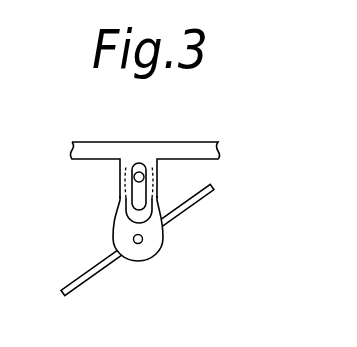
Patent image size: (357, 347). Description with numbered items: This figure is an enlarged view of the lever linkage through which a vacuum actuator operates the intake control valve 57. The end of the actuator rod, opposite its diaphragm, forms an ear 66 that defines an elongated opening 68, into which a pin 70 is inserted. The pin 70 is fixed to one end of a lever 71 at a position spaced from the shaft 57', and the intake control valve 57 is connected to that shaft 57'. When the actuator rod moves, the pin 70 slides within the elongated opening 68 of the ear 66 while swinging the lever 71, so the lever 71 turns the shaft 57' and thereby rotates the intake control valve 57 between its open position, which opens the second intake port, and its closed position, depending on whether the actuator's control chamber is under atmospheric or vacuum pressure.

The intake control valve 57 is at (137, 252).
The shaft 57' is at (175, 259).
The ear 66 is at (130, 181).
The elongated opening 68 is at (141, 193).
The pin 70 is at (139, 170).
The lever 71 is at (166, 230).